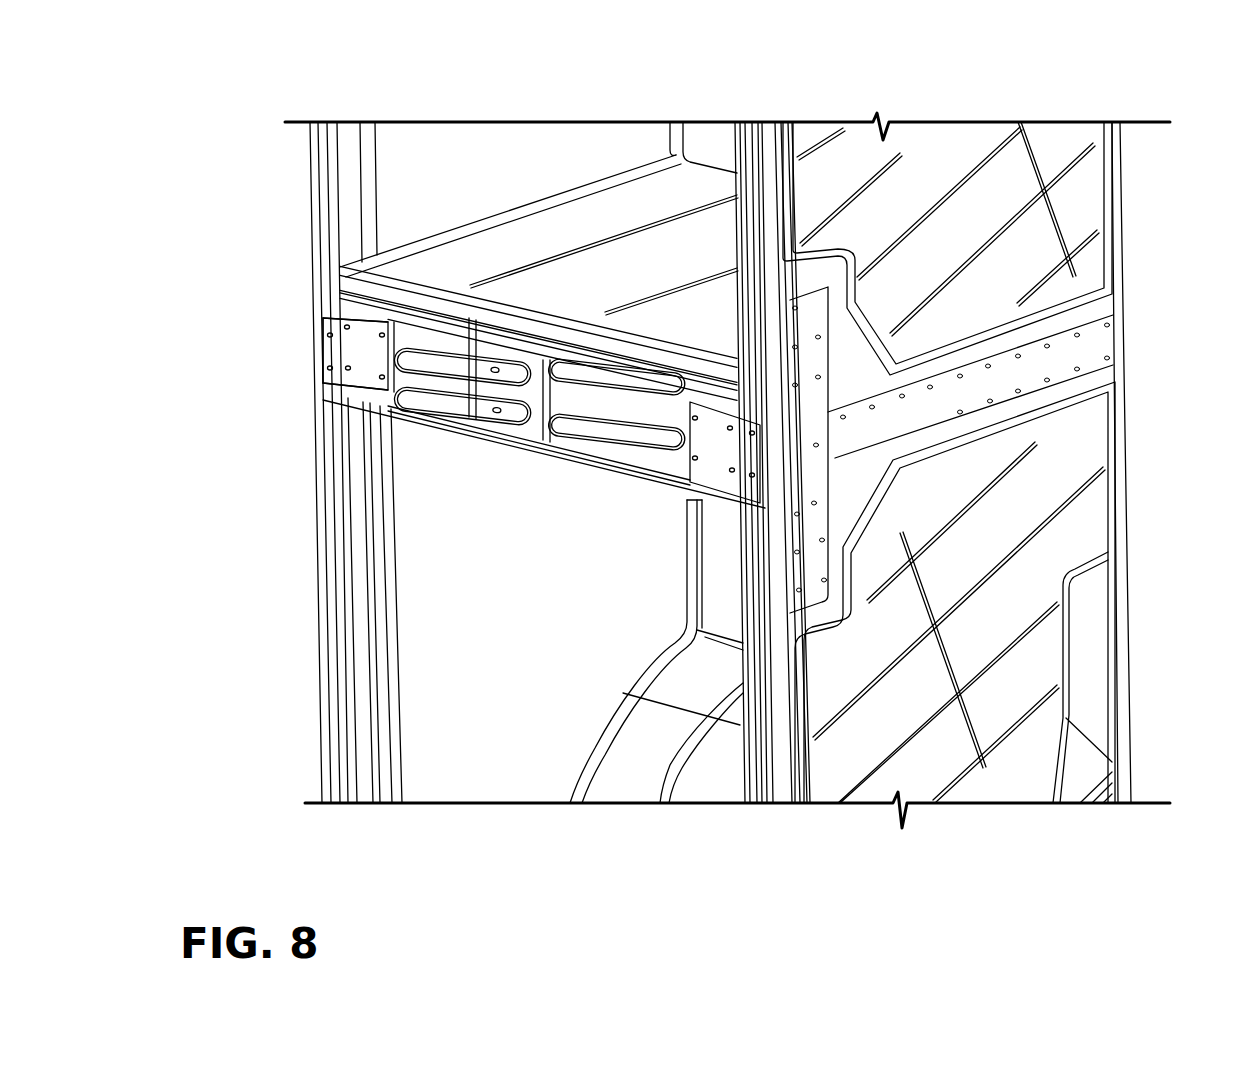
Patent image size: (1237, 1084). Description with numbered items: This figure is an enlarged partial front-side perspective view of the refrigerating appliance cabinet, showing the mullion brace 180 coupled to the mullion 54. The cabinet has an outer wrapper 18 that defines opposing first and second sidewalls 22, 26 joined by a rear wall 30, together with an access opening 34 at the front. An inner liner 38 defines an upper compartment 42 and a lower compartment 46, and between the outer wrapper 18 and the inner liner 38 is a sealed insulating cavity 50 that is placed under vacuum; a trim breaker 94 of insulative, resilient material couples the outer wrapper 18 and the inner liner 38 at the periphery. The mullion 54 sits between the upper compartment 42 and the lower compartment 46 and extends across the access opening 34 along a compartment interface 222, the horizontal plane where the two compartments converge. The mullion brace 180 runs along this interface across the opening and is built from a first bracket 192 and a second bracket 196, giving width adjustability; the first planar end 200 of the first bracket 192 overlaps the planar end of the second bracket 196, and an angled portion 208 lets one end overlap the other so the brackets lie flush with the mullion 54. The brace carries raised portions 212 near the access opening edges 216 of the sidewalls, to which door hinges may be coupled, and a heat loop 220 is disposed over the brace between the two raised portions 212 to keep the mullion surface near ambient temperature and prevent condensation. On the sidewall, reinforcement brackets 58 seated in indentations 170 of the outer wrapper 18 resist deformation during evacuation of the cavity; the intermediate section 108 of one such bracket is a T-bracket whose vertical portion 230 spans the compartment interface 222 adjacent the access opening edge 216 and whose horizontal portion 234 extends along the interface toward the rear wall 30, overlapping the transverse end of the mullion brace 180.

The outer wrapper 18 is at (906, 180).
The first sidewall 22 is at (312, 226).
The second sidewall 26 is at (1070, 215).
The rear wall 30 is at (1122, 426).
The access opening 34 is at (483, 738).
The inner liner 38 is at (420, 190).
The upper compartment 42 is at (518, 171).
The lower compartment 46 is at (516, 664).
The insulating cavity 50 is at (760, 792).
The mullion 54 is at (313, 382).
The reinforcement brackets 58 is at (1122, 340).
The trim breaker 94 is at (760, 772).
The intermediate section 108 is at (930, 400).
The indentations 170 is at (852, 376).
The mullion brace 180 is at (343, 348).
The first bracket 192 is at (427, 395).
The second bracket 196 is at (610, 440).
The first planar end 200 is at (512, 415).
The angled portion 208 is at (477, 405).
The raised portions 212 is at (360, 388).
The access opening edges 216 is at (742, 150).
The heat loop 220 is at (322, 318).
The compartment interface 222 is at (277, 387).
The vertical portion 230 is at (805, 318).
The horizontal portion 234 is at (1067, 357).